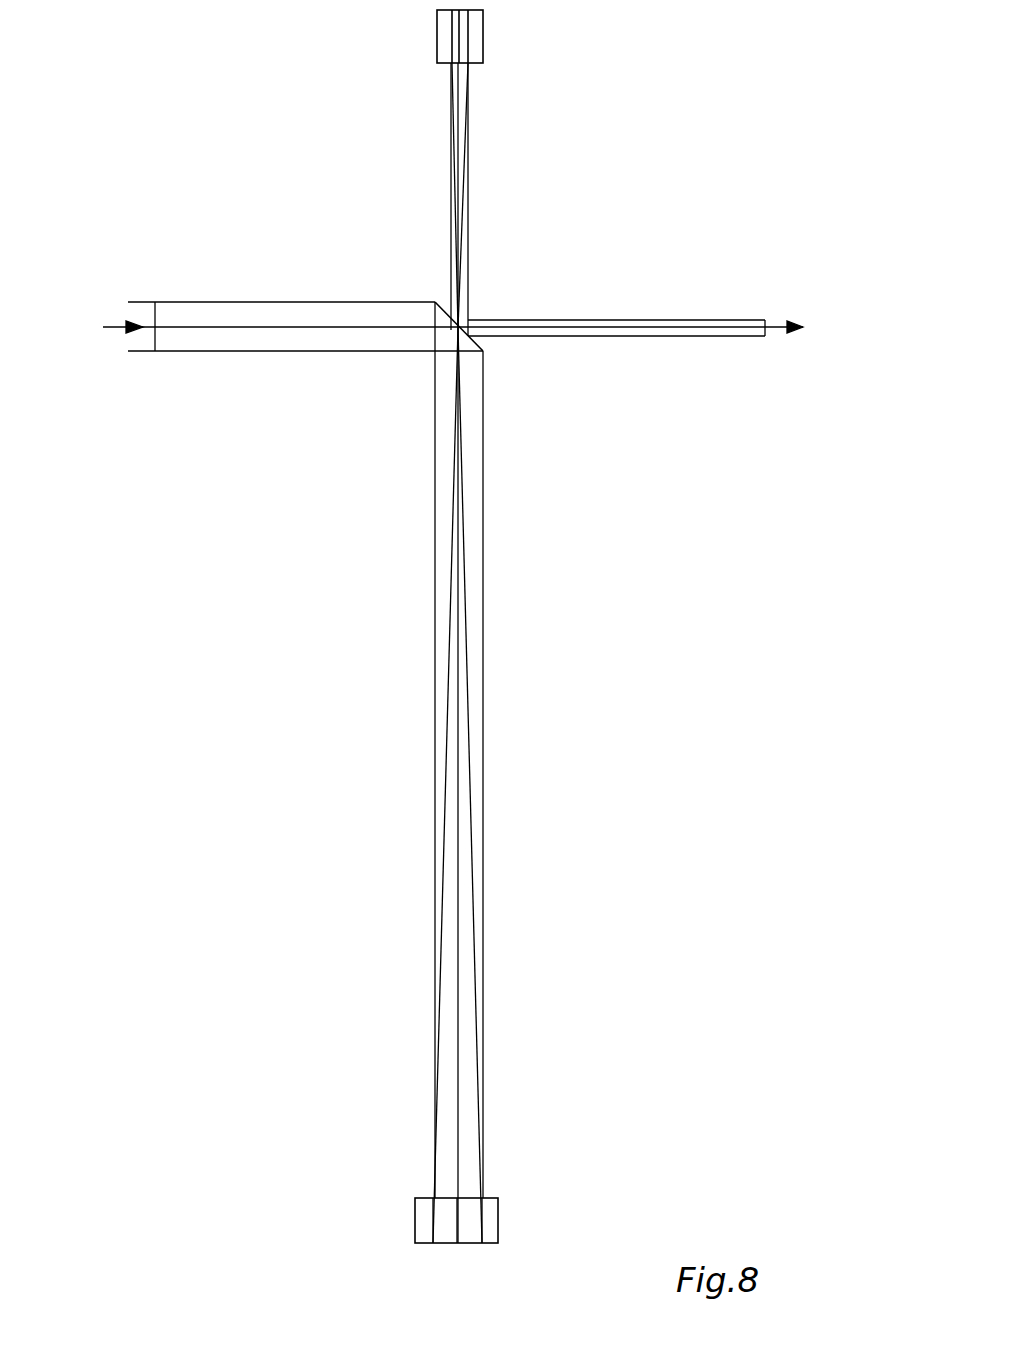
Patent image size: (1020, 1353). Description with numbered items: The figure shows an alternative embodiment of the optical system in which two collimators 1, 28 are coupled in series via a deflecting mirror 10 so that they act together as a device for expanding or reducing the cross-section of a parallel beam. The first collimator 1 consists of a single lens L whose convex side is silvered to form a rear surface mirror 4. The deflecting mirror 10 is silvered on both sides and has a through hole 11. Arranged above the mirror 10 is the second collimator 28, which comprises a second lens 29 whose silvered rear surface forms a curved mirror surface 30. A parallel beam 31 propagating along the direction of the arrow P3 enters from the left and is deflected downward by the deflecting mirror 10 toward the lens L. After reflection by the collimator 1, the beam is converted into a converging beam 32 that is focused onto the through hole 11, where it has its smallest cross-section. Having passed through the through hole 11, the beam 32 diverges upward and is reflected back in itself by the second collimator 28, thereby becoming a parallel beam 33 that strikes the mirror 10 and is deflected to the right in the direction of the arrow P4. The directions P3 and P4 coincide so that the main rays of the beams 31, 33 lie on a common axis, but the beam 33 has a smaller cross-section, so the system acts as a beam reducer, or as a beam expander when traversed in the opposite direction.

The collimator 1 is at (415, 1212).
The rear surface mirror 4 is at (441, 1245).
The lens L is at (498, 1228).
The deflecting mirror 10 is at (439, 302).
The through hole 11 is at (460, 332).
The second collimator 28 is at (436, 60).
The second lens 29 is at (437, 32).
The curved mirror surface 30 is at (482, 9).
The parallel beam 31 is at (243, 352).
The converging beam 32 is at (467, 622).
The parallel beam 33 is at (470, 266).
The propagation direction P3 is at (113, 330).
The propagation direction P4 is at (773, 330).